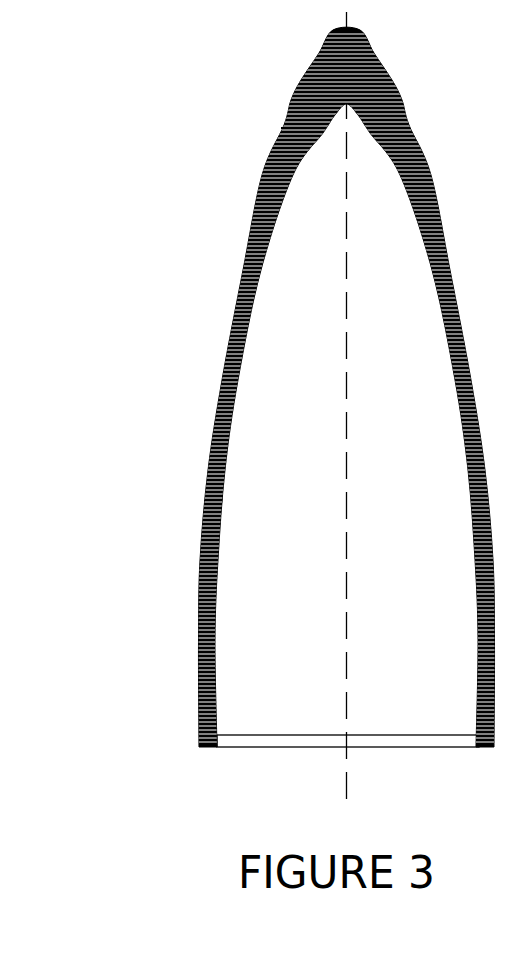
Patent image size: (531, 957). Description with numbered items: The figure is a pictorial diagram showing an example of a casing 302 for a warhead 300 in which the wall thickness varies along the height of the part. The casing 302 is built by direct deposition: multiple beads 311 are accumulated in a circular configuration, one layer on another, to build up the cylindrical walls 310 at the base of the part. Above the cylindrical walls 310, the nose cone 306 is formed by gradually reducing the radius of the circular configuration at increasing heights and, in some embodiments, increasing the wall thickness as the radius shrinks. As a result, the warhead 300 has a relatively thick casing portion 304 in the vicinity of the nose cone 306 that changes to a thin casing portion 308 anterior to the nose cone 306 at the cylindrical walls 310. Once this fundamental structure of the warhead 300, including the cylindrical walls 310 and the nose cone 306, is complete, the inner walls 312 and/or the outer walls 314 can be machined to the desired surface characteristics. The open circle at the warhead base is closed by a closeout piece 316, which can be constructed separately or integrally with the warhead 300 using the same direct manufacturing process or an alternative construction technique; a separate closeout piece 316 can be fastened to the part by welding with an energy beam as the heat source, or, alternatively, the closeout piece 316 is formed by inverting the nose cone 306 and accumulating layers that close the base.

The warhead 300 is at (265, 423).
The casing 302 is at (230, 352).
The thick casing portion 304 is at (308, 76).
The nose cone 306 is at (256, 225).
The thin casing portion 308 is at (198, 652).
The cylindrical walls 310 is at (200, 582).
The beads 311 is at (280, 128).
The inner walls 312 is at (218, 503).
The outer walls 314 is at (204, 507).
The closeout piece 316 is at (303, 750).